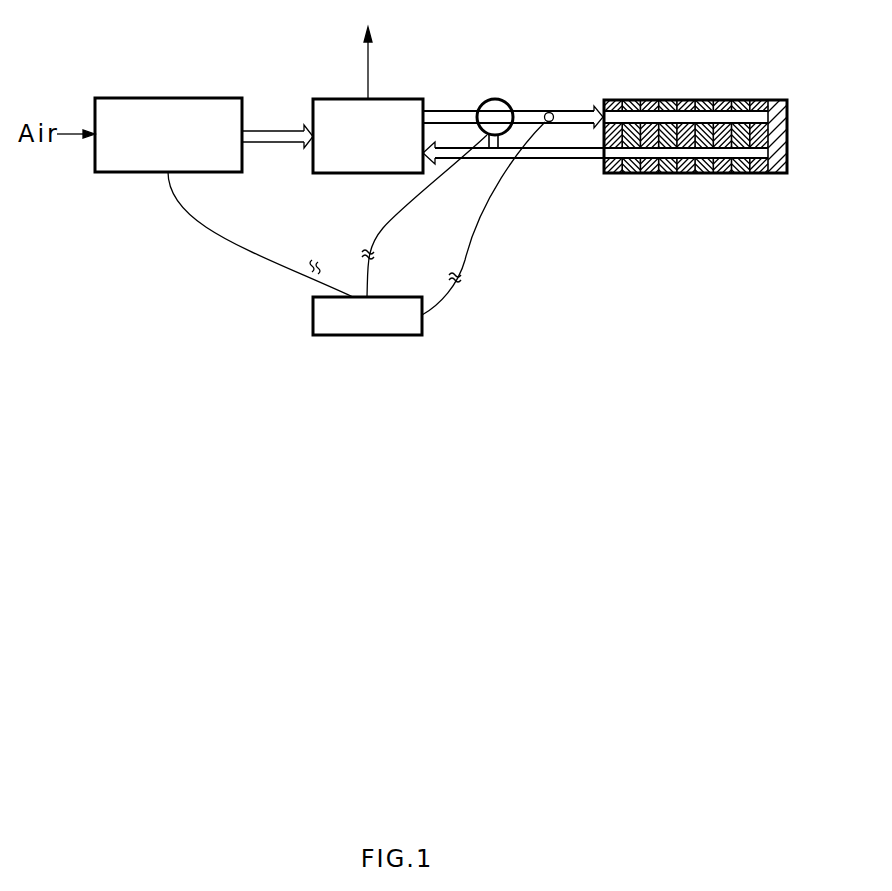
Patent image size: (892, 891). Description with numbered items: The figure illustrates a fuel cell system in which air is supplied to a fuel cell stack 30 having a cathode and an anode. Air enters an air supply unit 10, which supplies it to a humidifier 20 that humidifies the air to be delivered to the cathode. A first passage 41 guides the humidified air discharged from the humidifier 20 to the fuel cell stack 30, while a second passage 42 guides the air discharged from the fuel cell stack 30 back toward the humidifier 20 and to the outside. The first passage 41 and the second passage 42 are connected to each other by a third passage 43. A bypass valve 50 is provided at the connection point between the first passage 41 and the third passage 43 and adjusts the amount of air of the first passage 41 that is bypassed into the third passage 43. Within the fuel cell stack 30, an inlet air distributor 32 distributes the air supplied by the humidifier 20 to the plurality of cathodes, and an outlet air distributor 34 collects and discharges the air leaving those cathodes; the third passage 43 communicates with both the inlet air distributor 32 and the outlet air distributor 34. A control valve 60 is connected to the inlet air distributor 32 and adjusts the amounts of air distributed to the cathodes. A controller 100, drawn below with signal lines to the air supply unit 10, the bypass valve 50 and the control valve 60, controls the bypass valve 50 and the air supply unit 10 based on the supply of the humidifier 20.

The air supply unit 10 is at (169, 98).
The humidifier 20 is at (403, 98).
The fuel cell stack 30 is at (693, 100).
The inlet air distributor 32 is at (630, 100).
The outlet air distributor 34 is at (629, 173).
The first passage 41 is at (457, 111).
The second passage 42 is at (588, 158).
The third passage 43 is at (500, 137).
The bypass valve 50 is at (495, 99).
The control valve 60 is at (549, 113).
The controller 100 is at (368, 335).